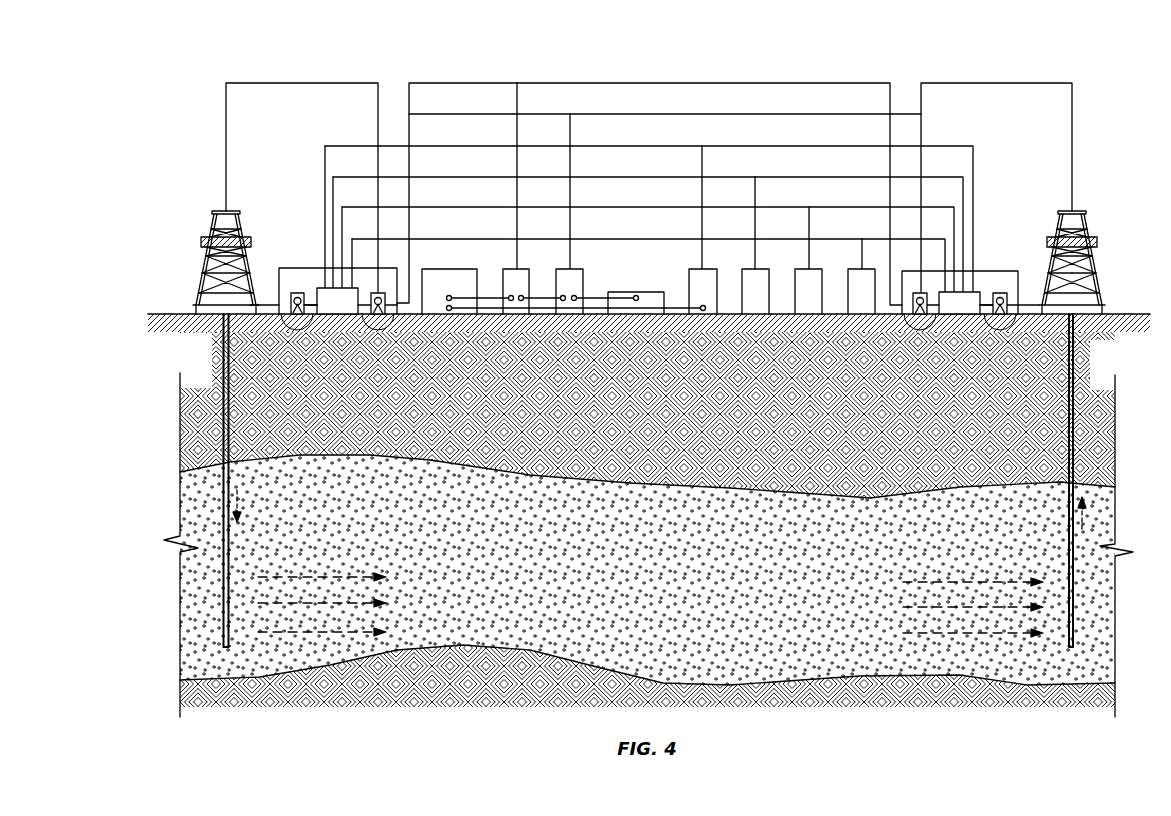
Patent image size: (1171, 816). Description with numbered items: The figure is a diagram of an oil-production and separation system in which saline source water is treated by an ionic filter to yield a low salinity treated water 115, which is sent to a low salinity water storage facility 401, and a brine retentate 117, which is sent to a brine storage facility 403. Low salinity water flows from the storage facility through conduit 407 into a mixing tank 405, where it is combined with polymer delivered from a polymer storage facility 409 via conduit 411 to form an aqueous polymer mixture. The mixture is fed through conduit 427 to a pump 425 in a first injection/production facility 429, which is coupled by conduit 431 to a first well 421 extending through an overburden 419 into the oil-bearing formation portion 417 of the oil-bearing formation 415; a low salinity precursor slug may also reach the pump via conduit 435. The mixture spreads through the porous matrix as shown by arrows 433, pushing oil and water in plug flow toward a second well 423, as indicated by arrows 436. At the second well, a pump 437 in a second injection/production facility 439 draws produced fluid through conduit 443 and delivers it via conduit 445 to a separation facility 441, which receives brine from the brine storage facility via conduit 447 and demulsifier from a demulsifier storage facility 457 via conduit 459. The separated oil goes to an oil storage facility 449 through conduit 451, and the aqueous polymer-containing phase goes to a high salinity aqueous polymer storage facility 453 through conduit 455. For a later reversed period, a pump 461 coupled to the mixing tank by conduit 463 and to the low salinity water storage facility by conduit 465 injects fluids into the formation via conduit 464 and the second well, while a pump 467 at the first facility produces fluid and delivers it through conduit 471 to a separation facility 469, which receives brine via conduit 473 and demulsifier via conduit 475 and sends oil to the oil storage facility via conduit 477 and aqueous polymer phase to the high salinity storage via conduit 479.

The low salinity treated water 115 is at (468, 300).
The brine retentate 117 is at (515, 300).
The low salinity water storage facility 401 is at (501, 283).
The brine storage facility 403 is at (688, 285).
The mixing tank 405 is at (555, 283).
The conduit 407 is at (543, 300).
The polymer storage facility 409 is at (653, 292).
The conduit 411 is at (597, 310).
The oil-bearing formation 415 is at (118, 717).
The formation portion 417 is at (174, 683).
The overburden 419 is at (174, 314).
The first well 421 is at (227, 413).
The second well 423 is at (1068, 415).
The pump 425 is at (391, 314).
The conduit 427 is at (486, 113).
The first injection/production facility 429 is at (305, 268).
The conduit 431 is at (308, 82).
The arrows 433 is at (342, 604).
The conduit 435 is at (486, 82).
The arrows 436 is at (951, 607).
The pump 437 is at (1017, 316).
The second injection/production facility 439 is at (980, 270).
The separation facility 441 is at (960, 303).
The conduit 443 is at (1033, 303).
The conduit 445 is at (985, 316).
The conduit 447 is at (752, 145).
The oil storage facility 449 is at (793, 285).
The conduit 451 is at (843, 206).
The high salinity aqueous polymer storage facility 453 is at (846, 285).
The conduit 455 is at (872, 238).
The demulsifier storage facility 457 is at (740, 285).
The conduit 459 is at (817, 176).
The pump 461 is at (903, 316).
The conduit 463 is at (724, 113).
The conduit 464 is at (995, 82).
The conduit 465 is at (724, 82).
The pump 467 is at (281, 314).
The separation facility 469 is at (350, 230).
The conduit 471 is at (317, 314).
The conduit 473 is at (486, 145).
The conduit 475 is at (486, 176).
The conduit 477 is at (486, 206).
The conduit 479 is at (486, 238).